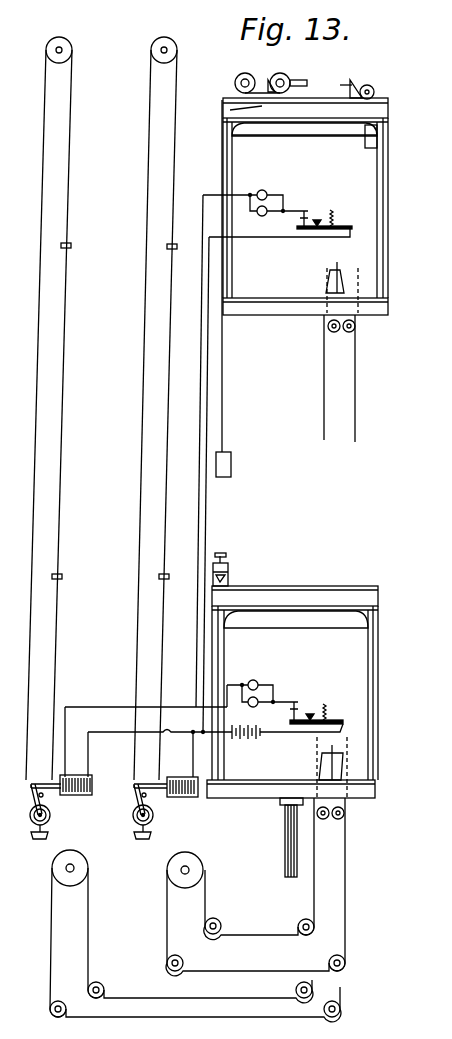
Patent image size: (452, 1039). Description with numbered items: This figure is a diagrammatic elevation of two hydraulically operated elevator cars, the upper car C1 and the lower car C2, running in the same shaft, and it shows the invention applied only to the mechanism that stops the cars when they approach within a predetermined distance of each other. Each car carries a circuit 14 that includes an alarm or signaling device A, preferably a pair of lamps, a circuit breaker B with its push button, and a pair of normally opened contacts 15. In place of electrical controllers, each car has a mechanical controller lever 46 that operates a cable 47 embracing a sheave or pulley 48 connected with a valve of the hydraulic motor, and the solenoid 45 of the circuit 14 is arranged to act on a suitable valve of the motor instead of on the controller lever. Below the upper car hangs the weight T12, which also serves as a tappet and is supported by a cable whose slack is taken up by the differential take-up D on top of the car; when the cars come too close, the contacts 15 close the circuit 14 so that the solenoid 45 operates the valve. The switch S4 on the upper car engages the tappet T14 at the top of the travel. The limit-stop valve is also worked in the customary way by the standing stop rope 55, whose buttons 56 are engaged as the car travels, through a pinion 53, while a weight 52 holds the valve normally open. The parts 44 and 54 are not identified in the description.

The circuit 14 is at (198, 411).
The normally opened contacts 15 is at (229, 577).
The rotary trip mechanism 44 is at (30, 817).
The solenoid 45 is at (190, 798).
The controller lever 46 is at (340, 240).
The cable 47 is at (356, 402).
The sheave or pulley 48 is at (76, 870).
The weight 52 is at (38, 840).
The pinion 53 is at (226, 556).
The lever arm 54 is at (31, 787).
The standing stop rope 55 is at (140, 484).
The buttons 56 is at (167, 247).
The alarm or signaling device A is at (251, 192).
The circuit breaker B is at (280, 215).
The upper elevator car C1 is at (305, 202).
The lower elevator car C2 is at (292, 731).
The differential take-up D is at (308, 82).
The weight (tappet) T12 is at (231, 467).
The tappet T14 is at (9, 44).
The switch S4 is at (6, 66).